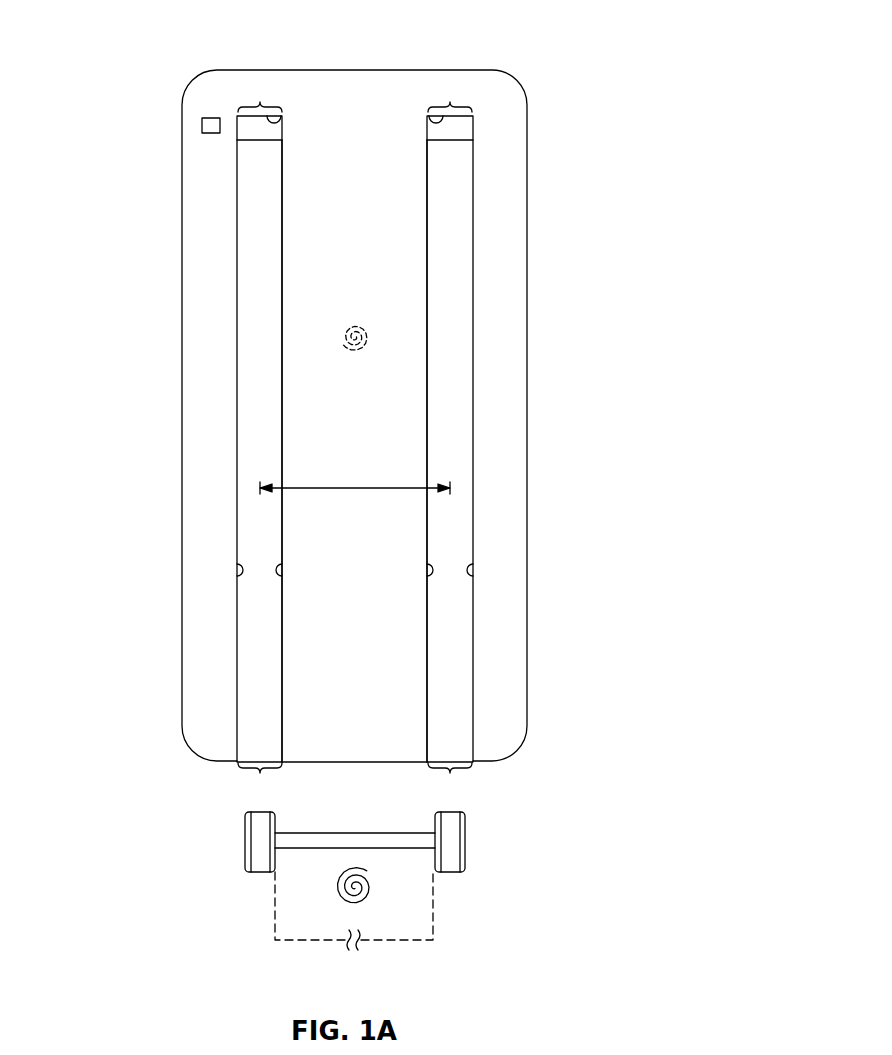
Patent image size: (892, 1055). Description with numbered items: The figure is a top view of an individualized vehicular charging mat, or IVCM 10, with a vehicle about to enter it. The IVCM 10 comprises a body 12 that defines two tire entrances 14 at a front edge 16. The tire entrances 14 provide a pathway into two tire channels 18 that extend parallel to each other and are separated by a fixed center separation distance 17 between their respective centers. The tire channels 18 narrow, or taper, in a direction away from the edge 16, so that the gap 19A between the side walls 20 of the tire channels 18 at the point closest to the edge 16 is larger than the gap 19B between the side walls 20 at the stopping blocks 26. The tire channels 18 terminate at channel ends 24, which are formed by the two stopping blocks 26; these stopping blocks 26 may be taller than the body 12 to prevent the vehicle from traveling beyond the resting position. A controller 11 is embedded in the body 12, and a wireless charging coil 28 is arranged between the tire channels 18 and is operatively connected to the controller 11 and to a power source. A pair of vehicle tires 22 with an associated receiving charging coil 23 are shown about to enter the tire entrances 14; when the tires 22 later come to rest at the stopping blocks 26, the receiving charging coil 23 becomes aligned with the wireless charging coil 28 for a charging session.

The IVCM 10 is at (149, 57).
The controller 11 is at (202, 126).
The body 12 is at (207, 298).
The tire entrances 14 is at (252, 742).
The front edge 16 is at (358, 765).
The center separation distance 17 is at (356, 487).
The tire channels 18 is at (252, 672).
The gap 19A is at (262, 772).
The gap 19B is at (258, 106).
The side walls 20 is at (285, 570).
The tires 22 is at (260, 873).
The receiving charging coil 23 is at (365, 898).
The channel ends 24 is at (280, 122).
The stopping blocks 26 is at (260, 128).
The wireless charging coil 28 is at (347, 322).